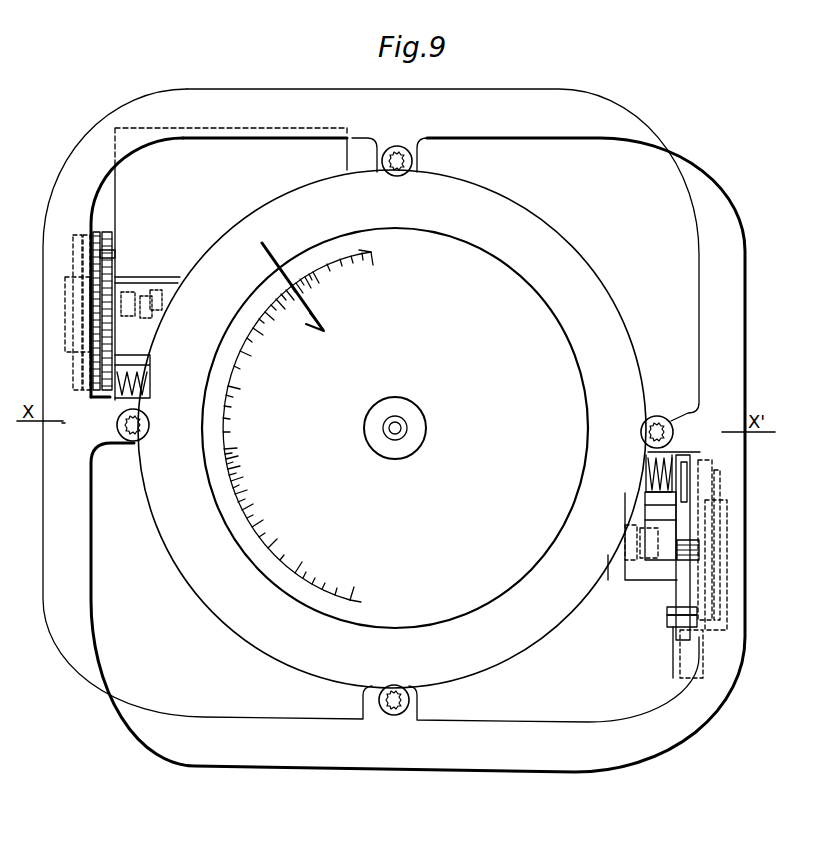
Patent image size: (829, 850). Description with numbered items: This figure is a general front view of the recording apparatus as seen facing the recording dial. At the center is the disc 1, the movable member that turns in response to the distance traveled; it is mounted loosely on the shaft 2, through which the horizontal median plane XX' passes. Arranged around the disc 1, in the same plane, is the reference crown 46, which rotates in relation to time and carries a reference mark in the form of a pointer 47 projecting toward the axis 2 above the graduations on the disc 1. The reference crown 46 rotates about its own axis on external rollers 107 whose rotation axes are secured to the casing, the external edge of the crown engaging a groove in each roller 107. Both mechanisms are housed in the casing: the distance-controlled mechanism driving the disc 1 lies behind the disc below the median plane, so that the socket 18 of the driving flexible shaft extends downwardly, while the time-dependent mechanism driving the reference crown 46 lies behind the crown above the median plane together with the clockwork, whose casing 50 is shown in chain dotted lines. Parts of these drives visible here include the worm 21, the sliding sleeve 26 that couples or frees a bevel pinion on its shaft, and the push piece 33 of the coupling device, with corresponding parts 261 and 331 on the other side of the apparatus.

The disc 1 is at (472, 273).
The shaft 2 is at (395, 428).
The socket of the driving flexible shaft 18 is at (697, 652).
The worm 21 is at (670, 543).
The sleeve 26 is at (652, 560).
The locking lever 261 is at (115, 293).
The push piece 33 is at (697, 454).
The spring 331 is at (93, 393).
The reference crown 46 is at (490, 207).
The pointer 47 is at (262, 250).
The casing of the clockwork 50 is at (316, 150).
The external rollers 107 is at (403, 148).